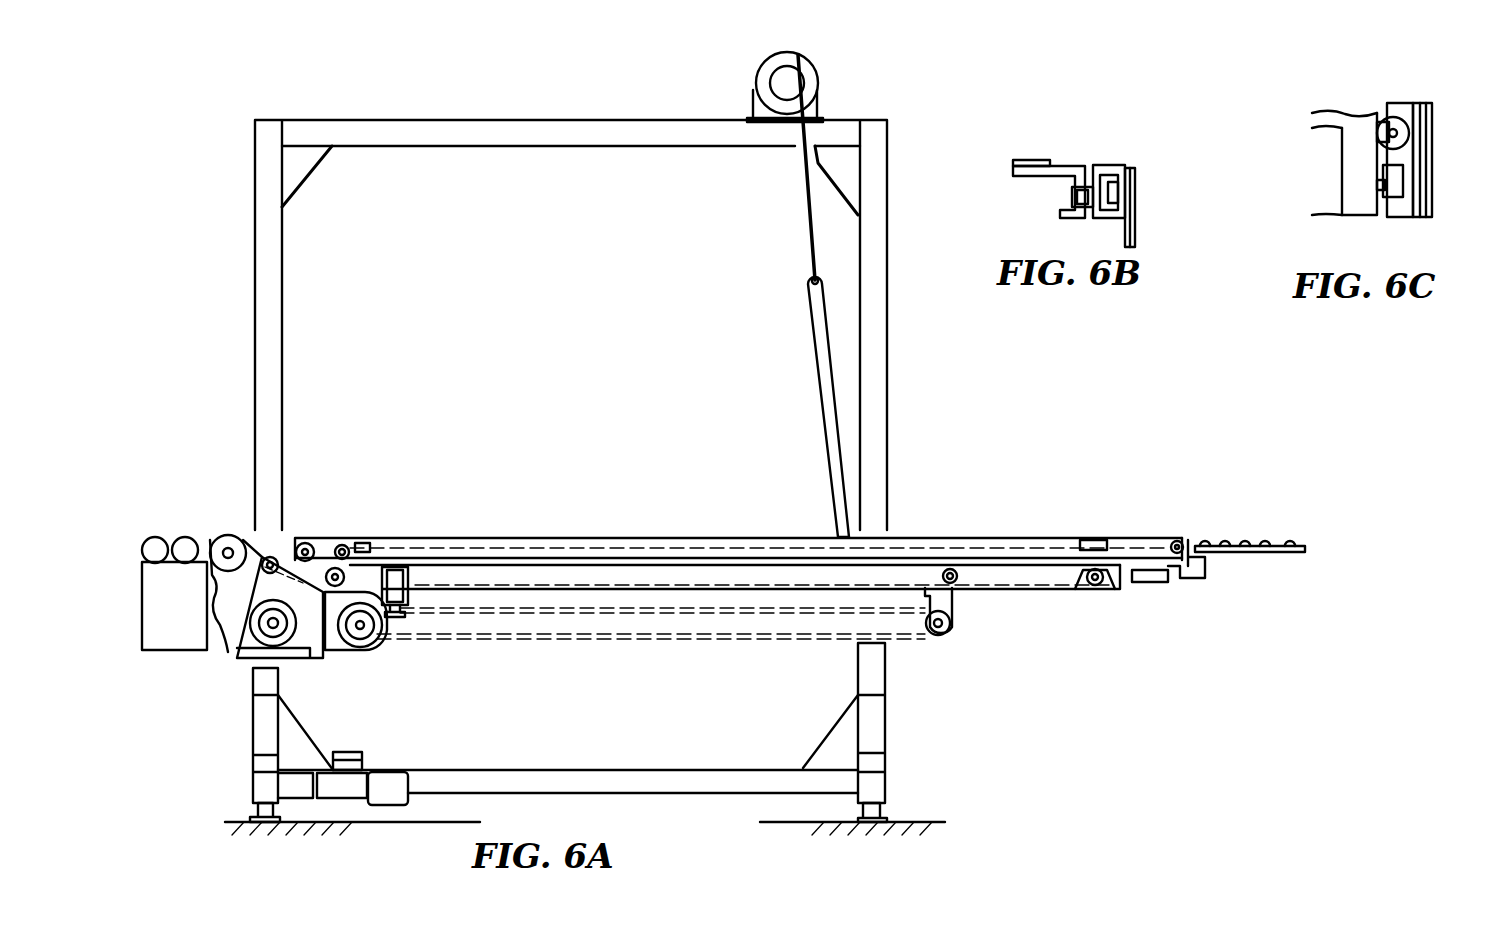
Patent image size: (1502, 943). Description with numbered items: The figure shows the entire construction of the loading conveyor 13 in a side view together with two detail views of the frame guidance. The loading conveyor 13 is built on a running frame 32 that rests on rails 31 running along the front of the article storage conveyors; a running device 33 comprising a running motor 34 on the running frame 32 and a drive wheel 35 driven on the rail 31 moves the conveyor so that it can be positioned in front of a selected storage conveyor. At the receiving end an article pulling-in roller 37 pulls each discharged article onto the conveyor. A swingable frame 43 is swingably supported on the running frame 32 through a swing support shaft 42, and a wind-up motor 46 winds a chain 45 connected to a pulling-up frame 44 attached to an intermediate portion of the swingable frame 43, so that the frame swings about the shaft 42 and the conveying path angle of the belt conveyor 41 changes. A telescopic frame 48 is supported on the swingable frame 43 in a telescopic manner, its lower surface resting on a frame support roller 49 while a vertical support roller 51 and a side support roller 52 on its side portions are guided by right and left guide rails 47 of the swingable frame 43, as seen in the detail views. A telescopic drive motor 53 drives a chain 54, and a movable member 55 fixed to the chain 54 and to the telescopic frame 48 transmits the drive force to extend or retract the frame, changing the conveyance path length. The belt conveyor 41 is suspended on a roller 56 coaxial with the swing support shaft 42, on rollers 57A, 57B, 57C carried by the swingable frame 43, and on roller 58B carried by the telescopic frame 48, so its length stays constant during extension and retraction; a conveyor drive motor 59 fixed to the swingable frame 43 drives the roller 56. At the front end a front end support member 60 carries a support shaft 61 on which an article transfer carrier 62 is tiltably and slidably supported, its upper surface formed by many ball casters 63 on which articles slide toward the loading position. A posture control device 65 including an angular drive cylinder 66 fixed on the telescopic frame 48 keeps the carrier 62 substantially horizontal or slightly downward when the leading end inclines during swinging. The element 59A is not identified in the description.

In FIG. 6A, the loading conveyor 13 is at (471, 118).
In FIG. 6A, the running frame 32 is at (628, 128).
In FIG. 6A, the wind-up motor 46 is at (765, 70).
In FIG. 6A, the chain 45 is at (808, 205).
In FIG. 6A, the pulling-up frame 44 is at (820, 360).
In FIG. 6A, the rails 31 is at (250, 821).
In FIG. 6A, the drive wheel 35 is at (258, 804).
In FIG. 6A, the running device 33 is at (355, 760).
In FIG. 6A, the running motor 34 is at (407, 778).
In FIG. 6A, the belt conveyor 41 is at (945, 535).
In FIG. 6B, the belt conveyor 41 is at (1035, 160).
In FIG. 6C, the belt conveyor 41 is at (1328, 213).
In FIG. 6A, the telescopic frame 48 is at (1040, 556).
In FIG. 6B, the telescopic frame 48 is at (1068, 166).
In FIG. 6C, the telescopic frame 48 is at (1360, 195).
In FIG. 6A, the swingable frame 43 is at (1050, 590).
In FIG. 6B, the swingable frame 43 is at (1127, 228).
In FIG. 6C, the swingable frame 43 is at (1432, 208).
In FIG. 6A, the telescopic drive motor 53 is at (442, 617).
In FIG. 6A, the article pulling-in roller 37 is at (155, 536).
In FIG. 6A, the pusher plate 59A is at (214, 604).
In FIG. 6A, the swing support shaft 42 is at (220, 542).
In FIG. 6A, the roller 56 is at (240, 546).
In FIG. 6A, the roller 57A is at (240, 652).
In FIG. 6A, the conveyor drive motor 59 is at (287, 650).
In FIG. 6A, the roller 57B is at (363, 642).
In FIG. 6A, the vertical support roller 51 is at (308, 546).
In FIG. 6B, the vertical support roller 51 is at (1100, 187).
In FIG. 6C, the vertical support roller 51 is at (1395, 180).
In FIG. 6A, the side support roller 52 is at (344, 546).
In FIG. 6B, the side support roller 52 is at (1118, 194).
In FIG. 6C, the side support roller 52 is at (1415, 131).
In FIG. 6A, the movable member 55 is at (372, 544).
In FIG. 6A, the chain 54 is at (400, 586).
In FIG. 6A, the frame support roller 49 is at (1096, 592).
In FIG. 6A, the angular drive cylinder 66 is at (1152, 584).
In FIG. 6A, the support shaft 61 is at (1208, 570).
In FIG. 6A, the front end support member 60 is at (1187, 541).
In FIG. 6A, the roller 58B is at (1172, 545).
In FIG. 6A, the article transfer carrier 62 is at (1295, 554).
In FIG. 6A, the ball casters 63 is at (1242, 542).
In FIG. 6A, the posture control device 65 is at (1187, 594).
In FIG. 6A, the roller 57C is at (945, 595).
In FIG. 6B, the guide rails 47 is at (1108, 166).
In FIG. 6C, the guide rails 47 is at (1397, 104).